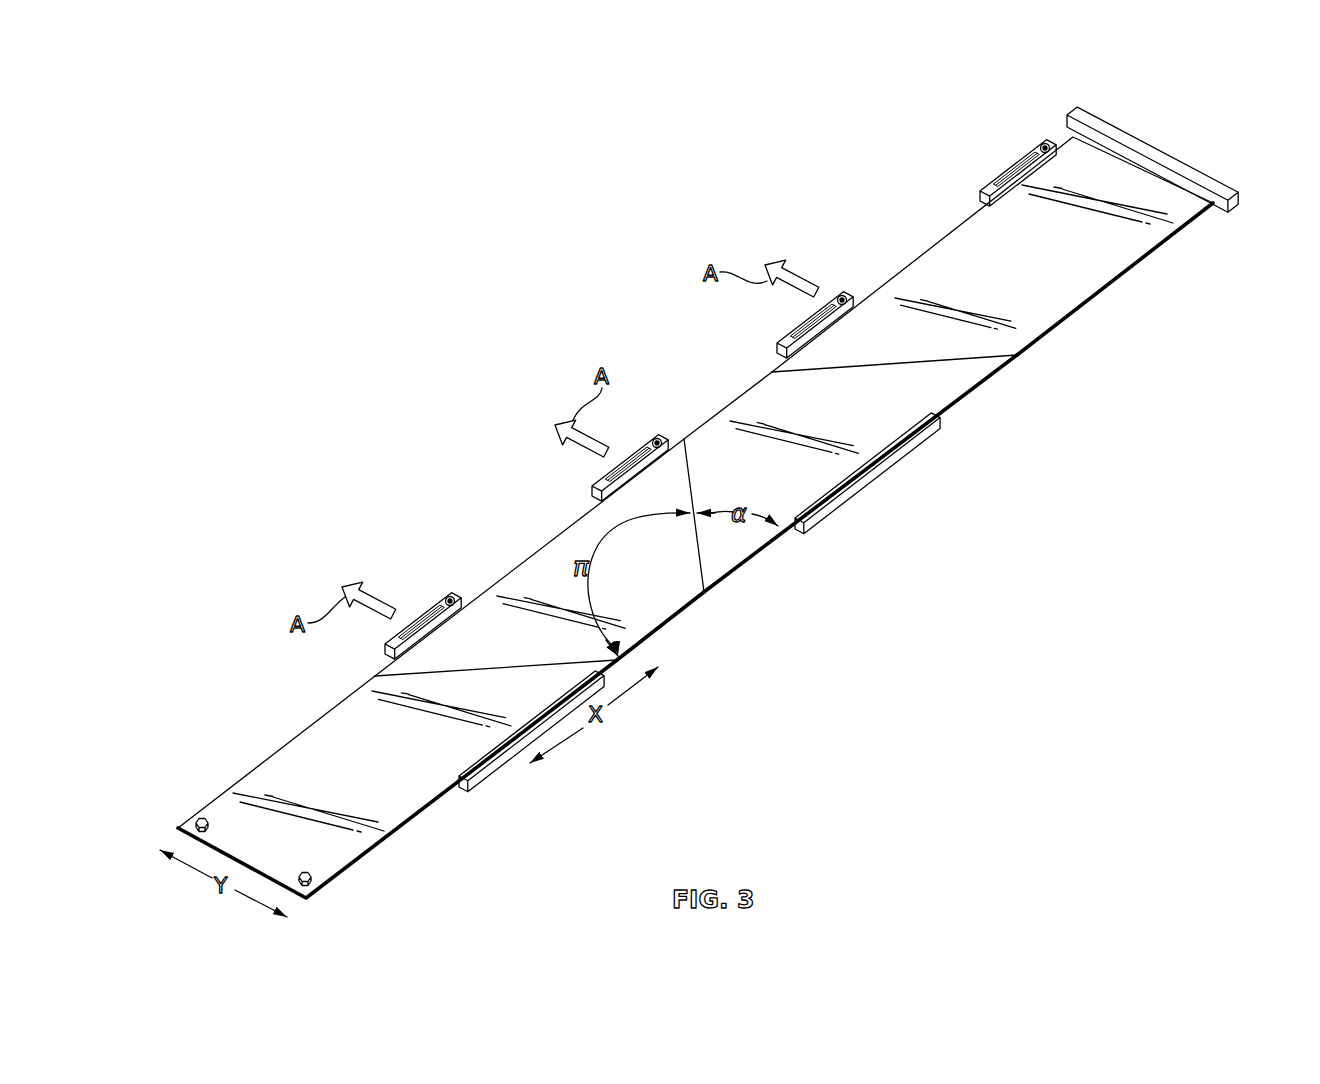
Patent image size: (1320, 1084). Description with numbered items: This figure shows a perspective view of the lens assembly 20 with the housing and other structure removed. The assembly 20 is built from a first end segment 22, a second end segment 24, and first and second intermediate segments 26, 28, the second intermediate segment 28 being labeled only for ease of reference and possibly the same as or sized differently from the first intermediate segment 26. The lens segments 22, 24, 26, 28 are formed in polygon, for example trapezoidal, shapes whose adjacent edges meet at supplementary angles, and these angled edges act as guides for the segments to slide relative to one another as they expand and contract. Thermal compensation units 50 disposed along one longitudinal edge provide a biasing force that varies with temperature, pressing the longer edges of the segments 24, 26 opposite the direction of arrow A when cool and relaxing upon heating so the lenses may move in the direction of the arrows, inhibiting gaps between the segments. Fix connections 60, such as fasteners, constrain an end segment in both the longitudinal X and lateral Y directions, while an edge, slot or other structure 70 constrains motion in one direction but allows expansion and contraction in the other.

The lens assembly 20 is at (440, 320).
The first end segment 22 is at (398, 800).
The second end segment 24 is at (1081, 270).
The first intermediate segment 26 is at (648, 600).
The second intermediate segment 28 is at (887, 422).
The thermal compensation unit 50 is at (420, 600).
The fix connection 60 is at (196, 817).
The edge, slot or other structure 70 is at (493, 753).